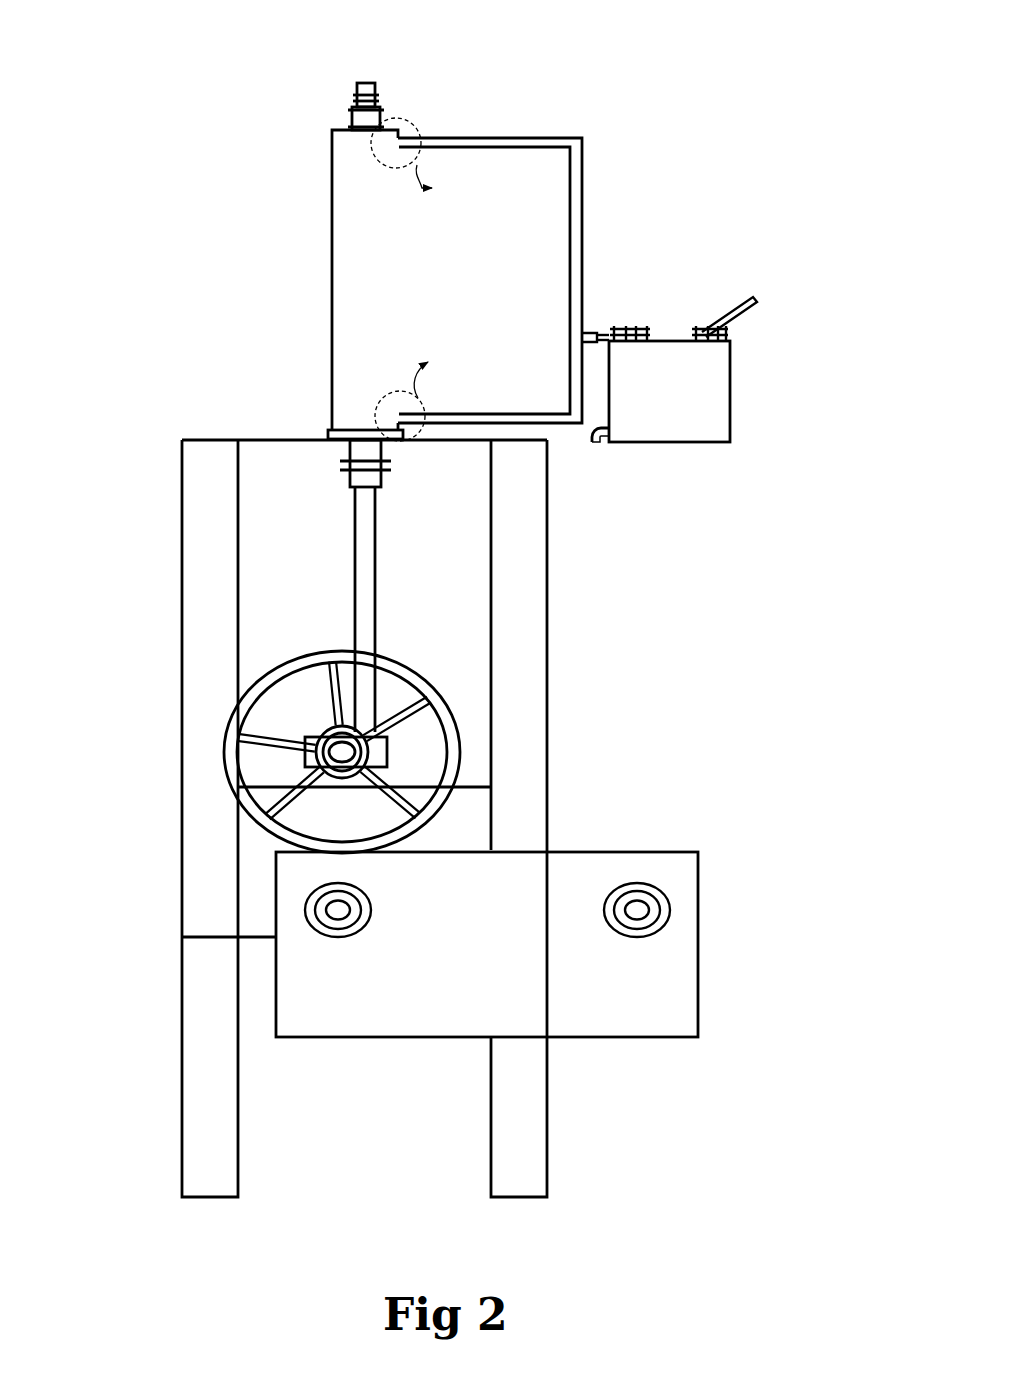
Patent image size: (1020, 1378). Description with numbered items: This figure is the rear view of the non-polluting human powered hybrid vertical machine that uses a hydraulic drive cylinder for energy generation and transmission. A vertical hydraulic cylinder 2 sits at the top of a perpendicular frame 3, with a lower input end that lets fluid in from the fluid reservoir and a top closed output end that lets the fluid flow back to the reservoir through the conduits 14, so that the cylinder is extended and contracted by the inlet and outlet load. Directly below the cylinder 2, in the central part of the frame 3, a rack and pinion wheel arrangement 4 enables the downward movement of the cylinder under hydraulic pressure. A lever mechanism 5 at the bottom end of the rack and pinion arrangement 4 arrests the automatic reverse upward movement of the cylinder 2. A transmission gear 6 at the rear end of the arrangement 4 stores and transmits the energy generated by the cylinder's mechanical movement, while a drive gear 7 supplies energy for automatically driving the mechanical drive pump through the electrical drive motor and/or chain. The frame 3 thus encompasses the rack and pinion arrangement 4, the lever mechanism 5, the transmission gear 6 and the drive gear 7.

The vertical hydraulic cylinder 2 is at (332, 293).
The conduits 14 is at (540, 140).
The perpendicular frame structure 3 is at (182, 645).
The rack and pinion wheel arrangement 4 is at (445, 700).
The lever mechanism 5 is at (387, 755).
The transmission gear 6 is at (330, 757).
The drive gear 7 is at (680, 930).